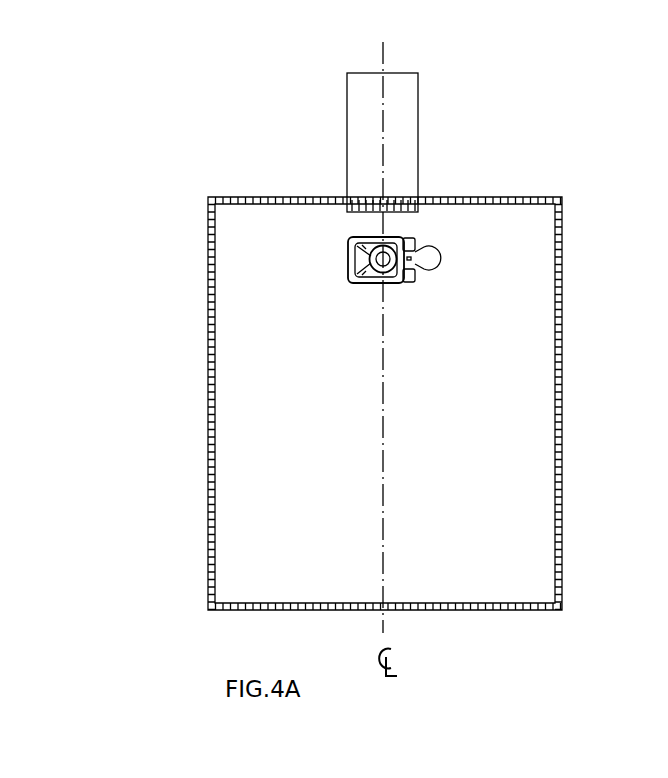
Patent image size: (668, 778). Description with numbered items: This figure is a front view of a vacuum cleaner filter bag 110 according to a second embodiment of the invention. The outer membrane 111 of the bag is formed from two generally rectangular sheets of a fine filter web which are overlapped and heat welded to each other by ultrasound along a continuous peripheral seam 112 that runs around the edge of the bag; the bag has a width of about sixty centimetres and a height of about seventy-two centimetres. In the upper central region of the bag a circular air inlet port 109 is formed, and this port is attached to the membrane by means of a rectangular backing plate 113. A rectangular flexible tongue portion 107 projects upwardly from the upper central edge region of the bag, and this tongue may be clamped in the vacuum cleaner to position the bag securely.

The flexible tongue portion 107 is at (403, 127).
The air inlet port 109 is at (357, 253).
The vacuum cleaner filter bag 110 is at (197, 182).
The outer membrane 111 is at (487, 365).
The peripheral seam 112 is at (556, 432).
The backing plate 113 is at (362, 268).